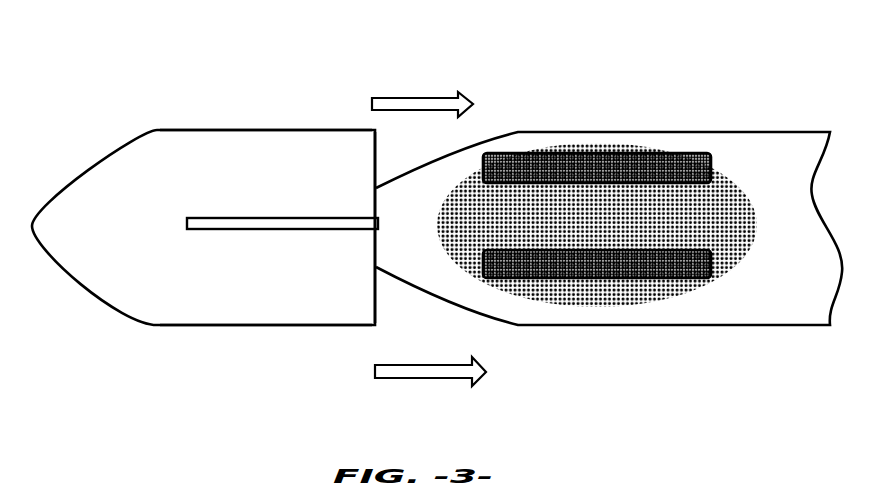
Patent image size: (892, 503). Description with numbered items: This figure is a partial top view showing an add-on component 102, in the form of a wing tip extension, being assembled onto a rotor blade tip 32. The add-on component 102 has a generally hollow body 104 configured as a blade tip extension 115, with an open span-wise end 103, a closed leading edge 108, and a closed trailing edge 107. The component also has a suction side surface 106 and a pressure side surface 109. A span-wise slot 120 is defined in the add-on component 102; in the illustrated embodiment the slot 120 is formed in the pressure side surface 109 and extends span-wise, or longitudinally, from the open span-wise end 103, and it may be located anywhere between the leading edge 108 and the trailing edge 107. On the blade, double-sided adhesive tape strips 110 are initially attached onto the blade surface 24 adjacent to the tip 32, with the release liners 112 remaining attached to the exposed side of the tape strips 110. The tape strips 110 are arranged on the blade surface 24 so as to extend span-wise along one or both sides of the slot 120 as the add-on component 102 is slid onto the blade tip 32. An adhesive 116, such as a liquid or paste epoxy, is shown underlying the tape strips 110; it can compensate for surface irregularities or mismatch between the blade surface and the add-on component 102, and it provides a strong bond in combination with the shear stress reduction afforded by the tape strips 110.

The suction side surface 24 is at (768, 148).
The blade tip 32 is at (442, 300).
The add-on component 102 is at (270, 105).
The open span-wise end 103 is at (378, 166).
The hollow body 104 is at (136, 290).
The suction side surface 106 is at (340, 292).
The closed trailing edge 107 is at (195, 327).
The closed leading edge 108 is at (190, 129).
The pressure side surface 109 is at (134, 239).
The double-sided adhesive tape strips 110 is at (580, 184).
The release liners 112 is at (705, 183).
The blade tip extension 115 is at (78, 162).
The adhesive 116 is at (520, 226).
The span-wise slot 120 is at (266, 217).